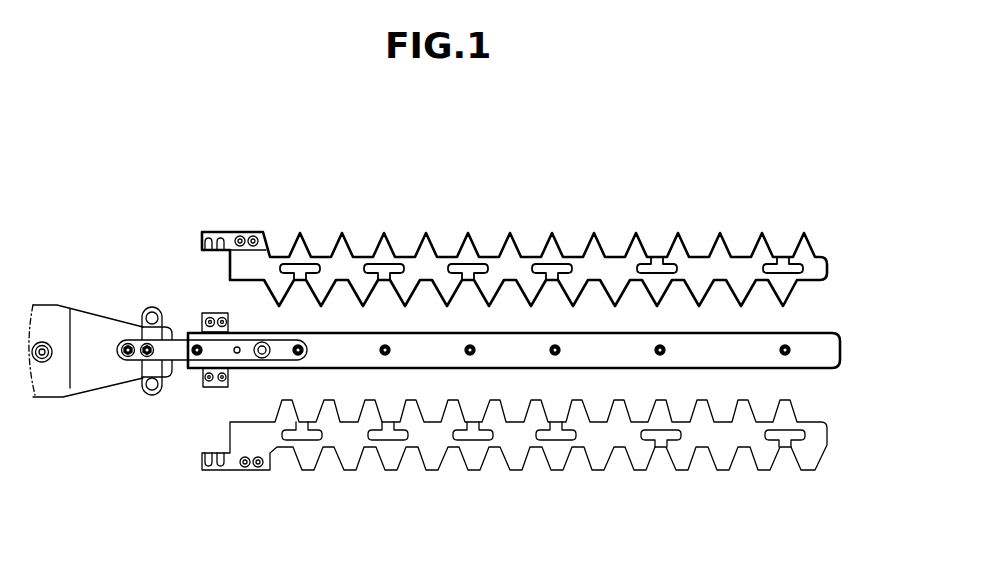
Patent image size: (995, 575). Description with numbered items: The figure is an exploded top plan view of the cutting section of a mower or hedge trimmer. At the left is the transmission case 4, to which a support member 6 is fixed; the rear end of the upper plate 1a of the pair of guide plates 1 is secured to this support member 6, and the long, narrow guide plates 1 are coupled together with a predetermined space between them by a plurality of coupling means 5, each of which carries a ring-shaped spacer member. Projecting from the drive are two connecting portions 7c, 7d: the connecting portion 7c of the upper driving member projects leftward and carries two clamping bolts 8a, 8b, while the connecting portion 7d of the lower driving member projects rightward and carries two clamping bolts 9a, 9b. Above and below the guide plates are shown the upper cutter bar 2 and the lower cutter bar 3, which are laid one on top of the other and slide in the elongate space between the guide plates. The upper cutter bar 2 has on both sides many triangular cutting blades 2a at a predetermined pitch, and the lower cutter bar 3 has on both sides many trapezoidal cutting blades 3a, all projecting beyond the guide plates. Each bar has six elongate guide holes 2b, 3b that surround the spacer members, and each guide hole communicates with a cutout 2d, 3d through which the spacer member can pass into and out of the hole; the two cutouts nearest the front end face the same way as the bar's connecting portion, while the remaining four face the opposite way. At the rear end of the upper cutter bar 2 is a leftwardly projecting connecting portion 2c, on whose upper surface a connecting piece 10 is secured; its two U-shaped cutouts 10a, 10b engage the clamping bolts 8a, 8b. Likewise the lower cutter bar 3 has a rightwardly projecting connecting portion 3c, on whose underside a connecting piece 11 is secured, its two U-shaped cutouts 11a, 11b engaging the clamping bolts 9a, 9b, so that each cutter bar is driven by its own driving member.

The pair of guide plates 1 is at (845, 345).
The upper plate 1a is at (828, 338).
The upper cutter bar 2 is at (532, 252).
The triangular cutting blades 2a is at (343, 234).
The elongate guide holes 2b is at (299, 266).
The connecting portion 2c is at (263, 234).
The cutouts 2d is at (663, 258).
The lower cutter bar 3 is at (493, 455).
The trapezoidal cutting blades 3a is at (382, 460).
The elongate guide holes 3b is at (311, 442).
The connecting portion 3c is at (272, 462).
The cutouts 3d is at (302, 424).
The transmission case 4 is at (100, 313).
The coupling means 5 is at (301, 347).
The support member 6 is at (178, 345).
The connecting portion 7c is at (212, 312).
The connecting portion 7d is at (212, 388).
The clamping bolt 8a is at (229, 318).
The clamping bolt 8b is at (205, 317).
The clamping bolt 9a is at (231, 380).
The clamping bolt 9b is at (202, 376).
The connecting piece 10 is at (217, 234).
The U-shaped cutout 10a is at (217, 232).
The U-shaped cutout 10b is at (203, 236).
The connecting piece 11 is at (214, 471).
The U-shaped cutout 11a is at (224, 471).
The U-shaped cutout 11b is at (206, 468).